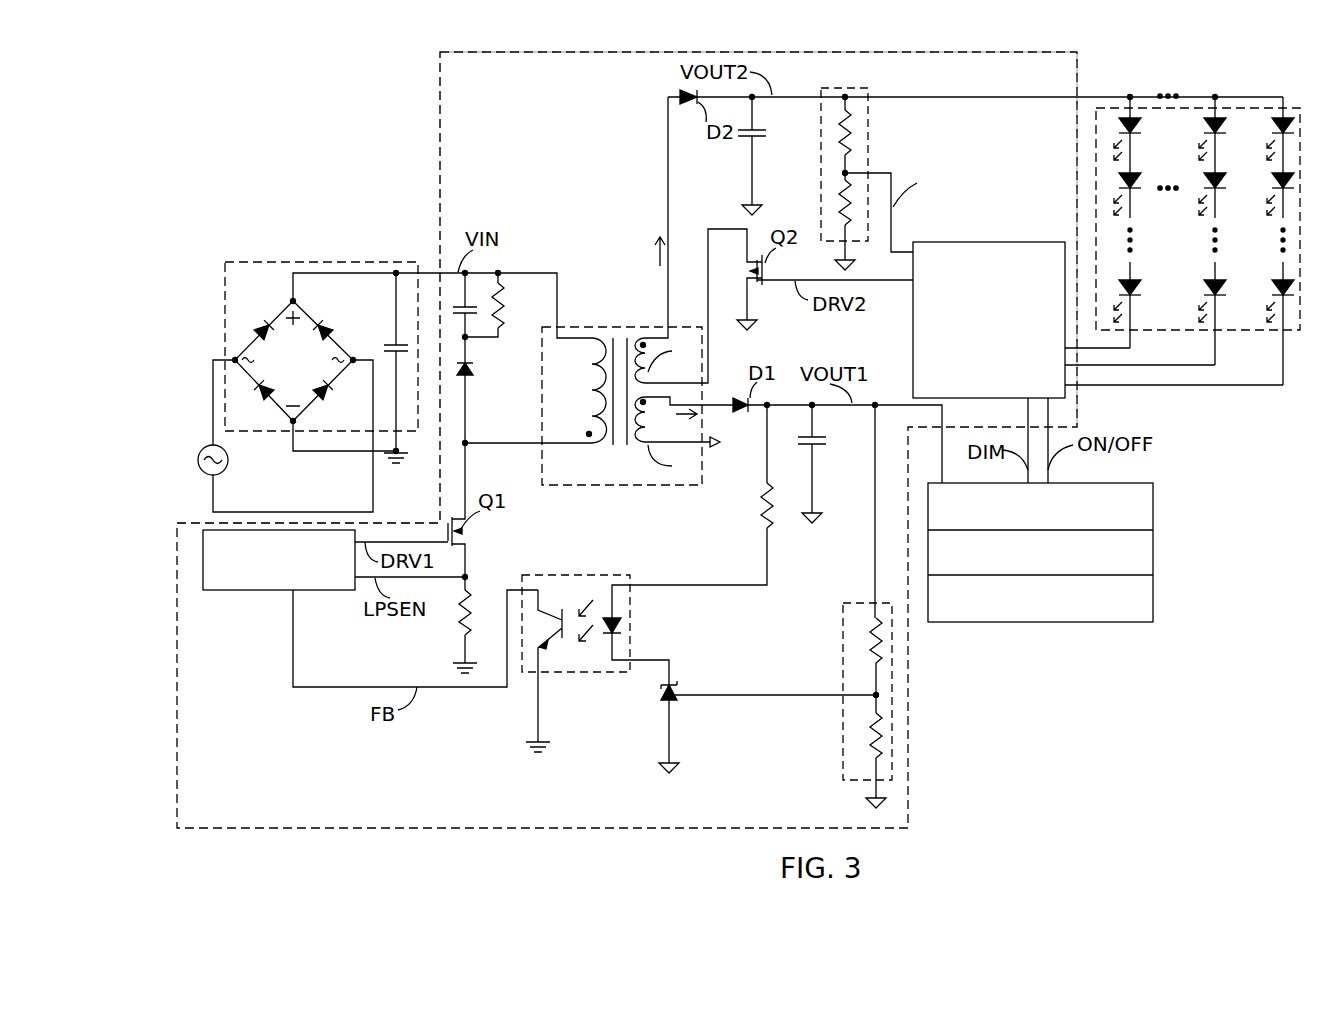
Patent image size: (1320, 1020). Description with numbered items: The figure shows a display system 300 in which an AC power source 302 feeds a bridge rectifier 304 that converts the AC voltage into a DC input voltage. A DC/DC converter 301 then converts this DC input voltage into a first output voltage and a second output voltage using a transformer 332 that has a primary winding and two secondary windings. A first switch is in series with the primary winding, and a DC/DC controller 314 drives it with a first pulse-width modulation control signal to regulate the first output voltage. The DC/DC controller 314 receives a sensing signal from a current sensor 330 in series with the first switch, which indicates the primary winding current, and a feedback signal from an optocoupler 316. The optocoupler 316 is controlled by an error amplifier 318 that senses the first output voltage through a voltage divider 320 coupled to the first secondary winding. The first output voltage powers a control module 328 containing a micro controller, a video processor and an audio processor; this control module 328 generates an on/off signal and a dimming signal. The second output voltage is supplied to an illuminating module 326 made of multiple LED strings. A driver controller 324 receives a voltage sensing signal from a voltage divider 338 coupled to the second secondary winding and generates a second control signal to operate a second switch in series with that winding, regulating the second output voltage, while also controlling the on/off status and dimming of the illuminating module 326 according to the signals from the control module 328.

The display system 300 is at (312, 172).
The DC/DC converter 301 is at (440, 82).
The AC power source 302 is at (222, 472).
The bridge rectifier 304 is at (362, 262).
The DC/DC controller 314 is at (262, 590).
The optocoupler 316 is at (585, 575).
The error amplifier 318 is at (672, 683).
The voltage divider 320 is at (843, 655).
The driver controller 324 is at (1005, 242).
The illuminating module 326 is at (1222, 330).
The control module 328 is at (1153, 512).
The current sensor 330 is at (470, 626).
The transformer 332 is at (590, 327).
The voltage divider 338 is at (868, 162).